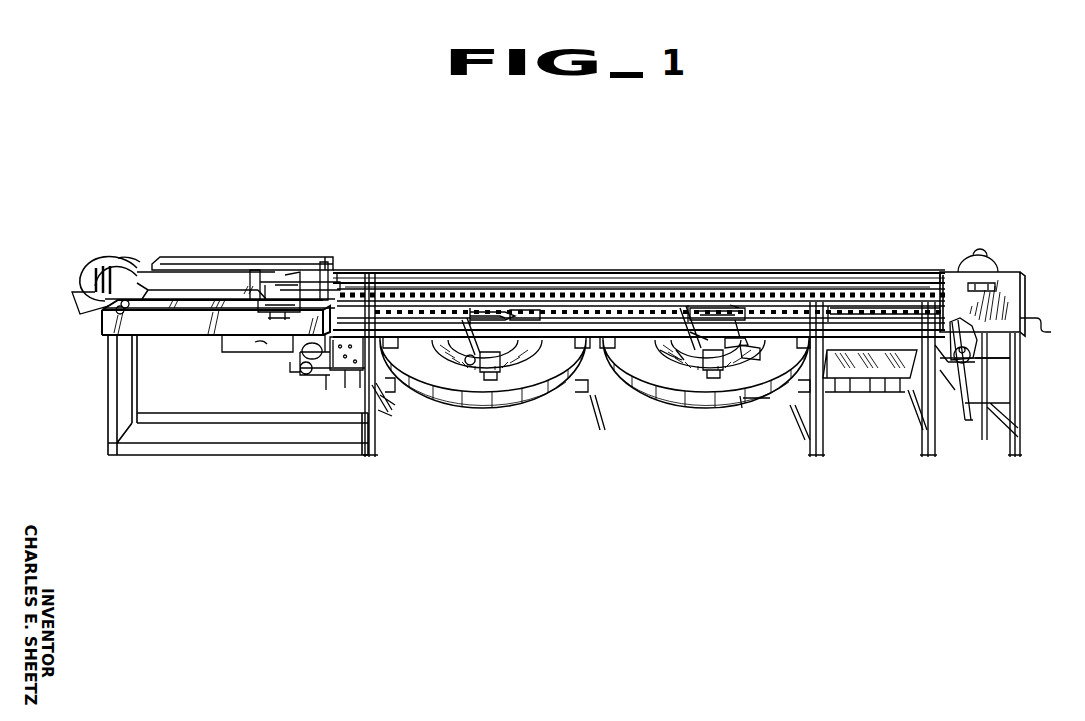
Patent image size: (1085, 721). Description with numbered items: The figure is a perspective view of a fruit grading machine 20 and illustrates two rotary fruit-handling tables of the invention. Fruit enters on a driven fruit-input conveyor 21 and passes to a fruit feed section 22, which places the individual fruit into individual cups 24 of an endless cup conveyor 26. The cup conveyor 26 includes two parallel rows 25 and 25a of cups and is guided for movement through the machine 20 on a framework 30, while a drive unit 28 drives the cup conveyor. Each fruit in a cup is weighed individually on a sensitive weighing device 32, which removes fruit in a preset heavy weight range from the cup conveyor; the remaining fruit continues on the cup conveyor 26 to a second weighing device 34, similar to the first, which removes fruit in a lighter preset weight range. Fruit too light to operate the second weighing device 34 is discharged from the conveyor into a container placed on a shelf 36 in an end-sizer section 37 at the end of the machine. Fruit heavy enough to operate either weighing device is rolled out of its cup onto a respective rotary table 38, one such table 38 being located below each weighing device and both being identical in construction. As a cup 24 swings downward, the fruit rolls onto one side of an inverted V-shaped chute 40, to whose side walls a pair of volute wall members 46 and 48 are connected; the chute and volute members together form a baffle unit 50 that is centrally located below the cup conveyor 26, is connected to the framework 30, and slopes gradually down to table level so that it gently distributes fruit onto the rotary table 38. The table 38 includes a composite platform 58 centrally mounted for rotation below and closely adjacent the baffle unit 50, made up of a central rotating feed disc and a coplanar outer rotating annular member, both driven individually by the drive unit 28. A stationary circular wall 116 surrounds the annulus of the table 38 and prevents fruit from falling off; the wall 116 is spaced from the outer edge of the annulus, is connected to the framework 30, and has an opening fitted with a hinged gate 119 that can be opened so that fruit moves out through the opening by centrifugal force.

The grading machine 20 is at (809, 235).
The fruit-input conveyor 21 is at (68, 279).
The fruit feed section 22 is at (188, 273).
The cups 24 is at (443, 300).
The row of cups 25 is at (285, 273).
The row of cups 25a is at (275, 309).
The cup conveyor 26 is at (581, 281).
The drive unit 28 is at (999, 263).
The framework 30 is at (503, 273).
The weighing device 32 is at (499, 329).
The second weighing device 34 is at (711, 318).
The shelf 36 is at (854, 358).
The end-sizer section 37 is at (877, 307).
The rotary table 38 is at (432, 407).
The chute 40 is at (725, 353).
The volute wall member 46 is at (667, 340).
The volute wall member 48 is at (735, 338).
The baffle unit 50 is at (678, 356).
The composite platform 58 is at (598, 366).
The circular wall 116 is at (486, 400).
The hinged gate 119 is at (757, 403).